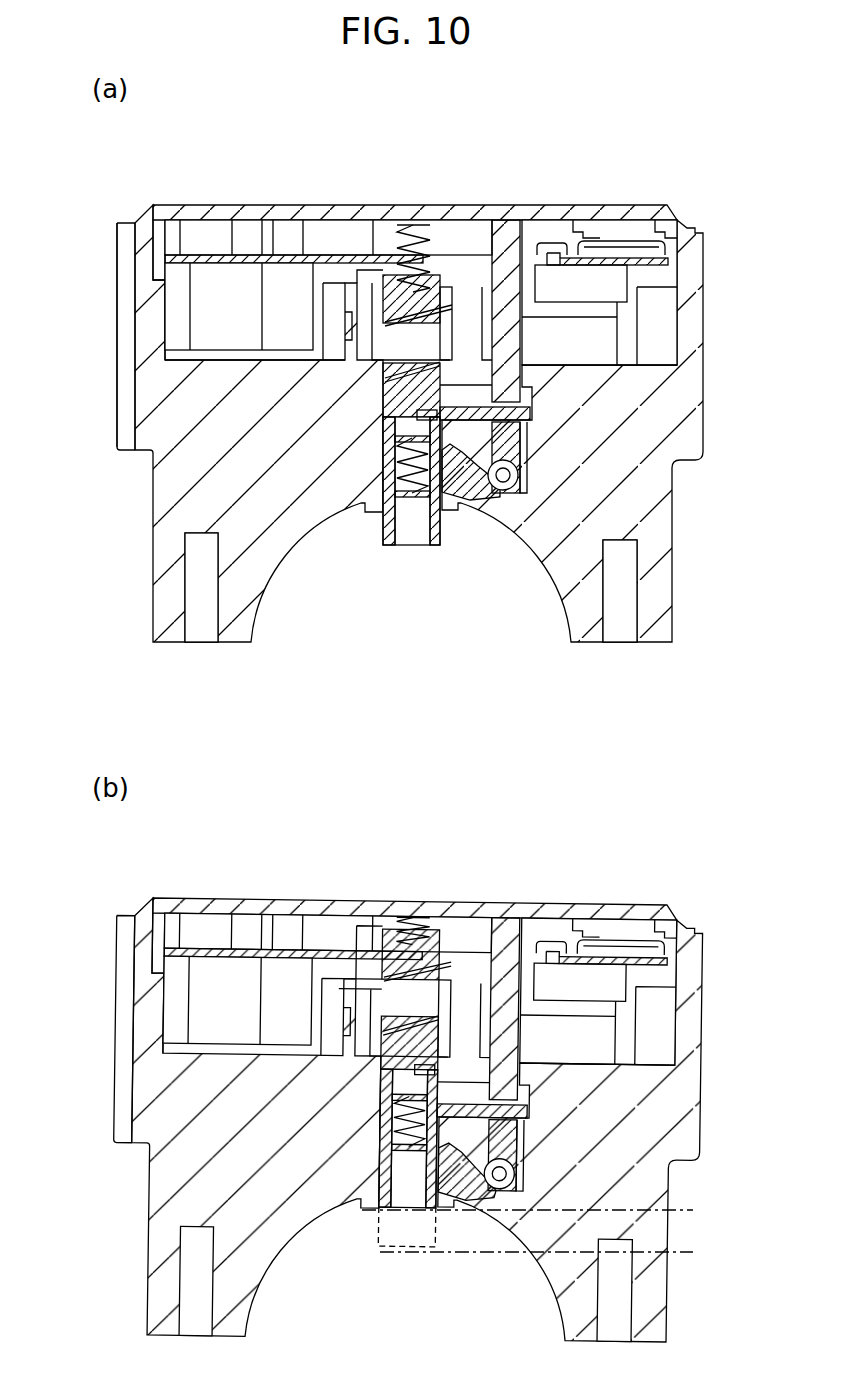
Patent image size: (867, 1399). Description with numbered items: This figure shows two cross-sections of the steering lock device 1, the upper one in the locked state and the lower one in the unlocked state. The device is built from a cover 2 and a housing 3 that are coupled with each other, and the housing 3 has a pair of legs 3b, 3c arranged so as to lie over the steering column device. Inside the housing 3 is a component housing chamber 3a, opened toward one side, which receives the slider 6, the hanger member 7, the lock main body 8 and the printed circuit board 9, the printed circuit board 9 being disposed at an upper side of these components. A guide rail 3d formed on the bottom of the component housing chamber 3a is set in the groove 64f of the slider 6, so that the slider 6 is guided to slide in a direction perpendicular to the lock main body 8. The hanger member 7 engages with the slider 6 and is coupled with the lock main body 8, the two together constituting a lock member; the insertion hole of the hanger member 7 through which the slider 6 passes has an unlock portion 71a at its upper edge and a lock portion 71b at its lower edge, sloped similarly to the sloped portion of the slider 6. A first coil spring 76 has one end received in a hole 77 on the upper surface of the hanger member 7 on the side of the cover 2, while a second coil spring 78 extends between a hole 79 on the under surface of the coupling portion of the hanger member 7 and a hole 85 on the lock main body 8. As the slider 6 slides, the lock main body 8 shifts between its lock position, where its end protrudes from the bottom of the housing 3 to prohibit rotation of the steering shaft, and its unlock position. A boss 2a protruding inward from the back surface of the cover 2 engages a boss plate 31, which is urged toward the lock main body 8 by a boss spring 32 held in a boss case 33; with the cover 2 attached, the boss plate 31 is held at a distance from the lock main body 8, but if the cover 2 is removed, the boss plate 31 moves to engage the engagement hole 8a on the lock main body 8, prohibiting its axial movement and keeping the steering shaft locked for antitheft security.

The steering lock device 1 is at (693, 162).
The cover 2 is at (592, 215).
The boss 2a is at (522, 350).
The housing 3 is at (414, 734).
The component housing chamber 3a is at (177, 320).
The leg 3b is at (660, 600).
The leg 3c is at (160, 600).
The guide rail 3d is at (330, 352).
The slider 6 is at (345, 345).
The hanger member 7 is at (357, 290).
The lock main body 8 is at (392, 553).
The engagement hole 8a is at (383, 418).
The printed circuit board 9 is at (330, 250).
The boss plate 31 is at (530, 415).
The boss spring 32 is at (522, 460).
The boss case 33 is at (520, 500).
The groove 64f is at (484, 355).
The unlock portion 71a is at (460, 300).
The lock portion 71b is at (383, 330).
The first coil spring 76 is at (420, 228).
The hole 77 is at (398, 270).
The second coil spring 78 is at (390, 520).
The hole 79 is at (395, 445).
The hole 85 is at (420, 500).